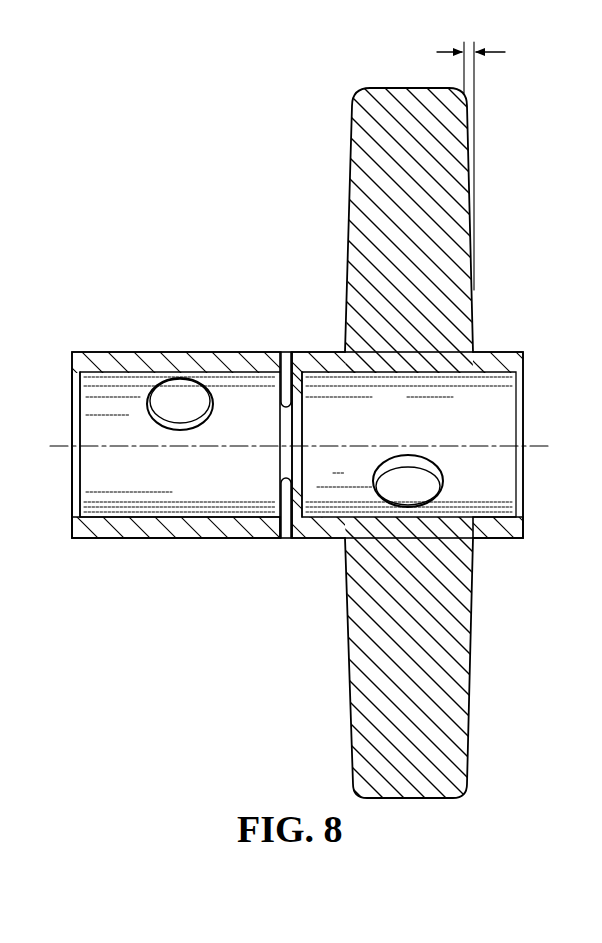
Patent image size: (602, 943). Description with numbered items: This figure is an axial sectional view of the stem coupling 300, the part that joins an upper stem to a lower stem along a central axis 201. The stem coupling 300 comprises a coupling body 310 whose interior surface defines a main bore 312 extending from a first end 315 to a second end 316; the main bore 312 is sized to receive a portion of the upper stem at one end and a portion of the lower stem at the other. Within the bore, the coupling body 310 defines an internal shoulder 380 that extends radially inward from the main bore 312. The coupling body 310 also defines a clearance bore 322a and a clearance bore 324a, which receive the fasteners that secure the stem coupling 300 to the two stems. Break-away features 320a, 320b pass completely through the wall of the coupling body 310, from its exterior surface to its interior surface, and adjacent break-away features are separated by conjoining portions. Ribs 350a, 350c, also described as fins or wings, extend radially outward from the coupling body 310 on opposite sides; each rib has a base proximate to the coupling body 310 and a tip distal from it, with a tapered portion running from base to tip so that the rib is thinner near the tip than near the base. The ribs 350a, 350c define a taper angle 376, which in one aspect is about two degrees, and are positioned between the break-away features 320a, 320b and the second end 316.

The stem coupling 300 is at (204, 217).
The coupling body 310 is at (229, 540).
The main bore 312 is at (259, 486).
The first end 315 is at (72, 503).
The second end 316 is at (526, 386).
The central axis 201 is at (500, 443).
The break-away feature 320a is at (297, 488).
The break-away feature 320b is at (287, 350).
The clearance bore 322a is at (174, 430).
The clearance bore 324a is at (440, 490).
The rib 350a is at (467, 762).
The rib 350c is at (472, 136).
The taper angle 376 is at (477, 50).
The internal shoulder 380 is at (301, 433).